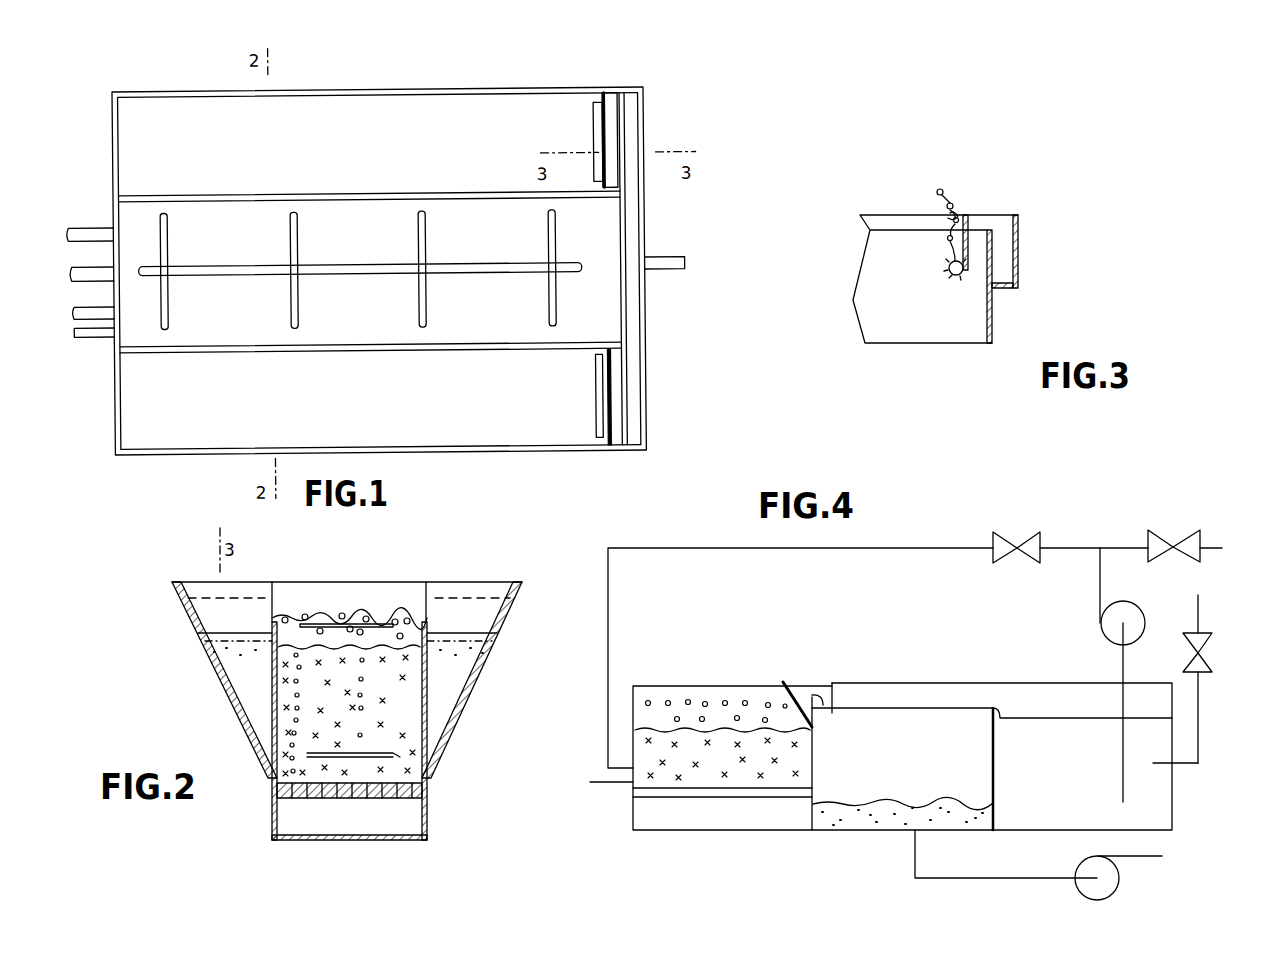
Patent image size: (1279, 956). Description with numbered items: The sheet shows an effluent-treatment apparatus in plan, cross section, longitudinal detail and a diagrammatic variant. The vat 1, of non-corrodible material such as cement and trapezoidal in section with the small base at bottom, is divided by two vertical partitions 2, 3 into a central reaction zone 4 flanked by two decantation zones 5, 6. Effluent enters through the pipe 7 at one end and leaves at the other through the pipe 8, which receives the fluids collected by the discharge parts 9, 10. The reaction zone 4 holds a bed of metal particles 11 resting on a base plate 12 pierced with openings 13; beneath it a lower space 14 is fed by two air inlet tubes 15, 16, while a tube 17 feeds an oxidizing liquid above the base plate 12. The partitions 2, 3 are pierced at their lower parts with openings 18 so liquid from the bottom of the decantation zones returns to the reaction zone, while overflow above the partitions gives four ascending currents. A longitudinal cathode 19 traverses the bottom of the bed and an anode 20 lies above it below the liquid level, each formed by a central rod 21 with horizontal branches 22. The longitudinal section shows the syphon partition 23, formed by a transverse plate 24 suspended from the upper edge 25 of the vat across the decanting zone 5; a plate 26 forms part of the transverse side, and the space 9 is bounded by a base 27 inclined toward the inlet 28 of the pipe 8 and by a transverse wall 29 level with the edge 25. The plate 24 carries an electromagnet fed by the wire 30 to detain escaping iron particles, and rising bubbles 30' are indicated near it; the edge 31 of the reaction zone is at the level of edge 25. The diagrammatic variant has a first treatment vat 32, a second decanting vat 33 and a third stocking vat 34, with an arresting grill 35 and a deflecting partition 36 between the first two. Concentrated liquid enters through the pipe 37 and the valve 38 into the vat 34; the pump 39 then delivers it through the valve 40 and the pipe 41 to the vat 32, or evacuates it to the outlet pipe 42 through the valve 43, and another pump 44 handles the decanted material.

In FIG. 1, the vat 1 is at (214, 92).
In FIG. 2, the vat 1 is at (218, 668).
In FIG. 1, the vertical partition 2 is at (320, 196).
In FIG. 2, the vertical partition 2 is at (272, 690).
In FIG. 1, the vertical partition 3 is at (325, 353).
In FIG. 2, the vertical partition 3 is at (427, 692).
In FIG. 1, the central reaction zone 4 is at (351, 236).
In FIG. 2, the central reaction zone 4 is at (339, 699).
In FIG. 1, the decantation zone 5 is at (484, 161).
In FIG. 2, the decantation zone 5 is at (252, 697).
In FIG. 1, the decantation zone 6 is at (487, 409).
In FIG. 2, the decantation zone 6 is at (452, 706).
In FIG. 1, the inlet pipe 7 is at (75, 282).
In FIG. 1, the discharge pipe 8 is at (670, 262).
In FIG. 1, the discharge part / space 9 is at (634, 134).
In FIG. 3, the discharge part / space 9 is at (1003, 231).
In FIG. 1, the discharge part / space 10 is at (637, 412).
In FIG. 2, the bed of metal particles 11 is at (390, 688).
In FIG. 2, the base plate 12 is at (420, 796).
In FIG. 2, the openings 13 is at (292, 800).
In FIG. 2, the lower space 14 is at (338, 832).
In FIG. 1, the air inlet tube 15 is at (84, 226).
In FIG. 1, the air inlet tube 16 is at (74, 319).
In FIG. 1, the oxidizing liquid feed tube 17 is at (97, 338).
In FIG. 2, the openings 18 is at (276, 754).
In FIG. 2, the cathode 19 is at (418, 768).
In FIG. 1, the anode 20 is at (258, 258).
In FIG. 2, the anode 20 is at (378, 610).
In FIG. 1, the central rod 21 is at (474, 268).
In FIG. 1, the horizontal branches 22 is at (424, 322).
In FIG. 1, the syphon partition 23 is at (609, 92).
In FIG. 3, the syphon partition 23 is at (975, 237).
In FIG. 3, the transverse plate 24 is at (946, 222).
In FIG. 3, the upper edge 25 is at (878, 216).
In FIG. 3, the plate 26 is at (990, 336).
In FIG. 3, the base 27 is at (1008, 292).
In FIG. 1, the inlet 28 is at (636, 258).
In FIG. 3, the transverse wall 29 is at (1017, 262).
In FIG. 1, the wire 30 is at (579, 141).
In FIG. 3, the wire 30 is at (940, 269).
In FIG. 3, the rising gas bubbles 30' is at (932, 205).
In FIG. 1, the edge 31 is at (622, 320).
In FIG. 4, the first vat 32 is at (745, 765).
In FIG. 4, the second vat 33 is at (925, 777).
In FIG. 4, the third vat 34 is at (1087, 773).
In FIG. 4, the arresting grill 35 is at (810, 682).
In FIG. 4, the deflecting partition 36 is at (840, 702).
In FIG. 4, the pipe 37 is at (1198, 744).
In FIG. 4, the valve 38 is at (1208, 662).
In FIG. 4, the pump 39 is at (1100, 630).
In FIG. 4, the valve 40 is at (1040, 540).
In FIG. 4, the pipe 41 is at (609, 637).
In FIG. 4, the outlet pipe 42 is at (1224, 540).
In FIG. 4, the valve 43 is at (1174, 534).
In FIG. 4, the pump 44 is at (612, 785).